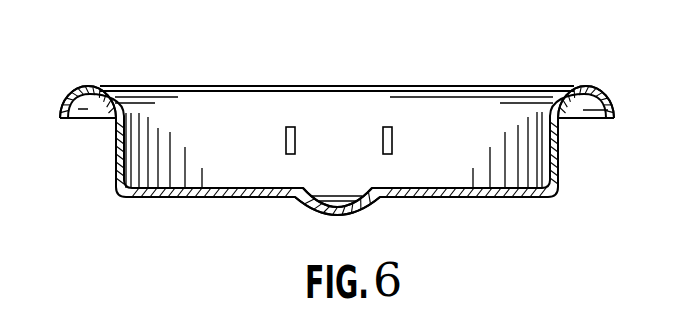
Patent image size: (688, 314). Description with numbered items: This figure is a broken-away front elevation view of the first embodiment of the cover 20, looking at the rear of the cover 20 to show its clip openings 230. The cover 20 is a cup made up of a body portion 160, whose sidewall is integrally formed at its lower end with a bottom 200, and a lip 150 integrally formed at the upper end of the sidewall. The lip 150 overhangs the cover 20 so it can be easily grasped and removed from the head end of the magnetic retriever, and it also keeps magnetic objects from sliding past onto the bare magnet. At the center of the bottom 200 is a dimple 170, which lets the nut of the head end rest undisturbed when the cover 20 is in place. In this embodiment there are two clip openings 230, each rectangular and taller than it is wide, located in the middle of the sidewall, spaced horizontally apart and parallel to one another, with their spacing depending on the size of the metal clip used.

The cover 20 is at (331, 139).
The lip 150 is at (70, 97).
The body portion 160 is at (562, 145).
The dimple 170 is at (362, 208).
The bottom 200 is at (217, 199).
The clip openings 230 is at (383, 125).